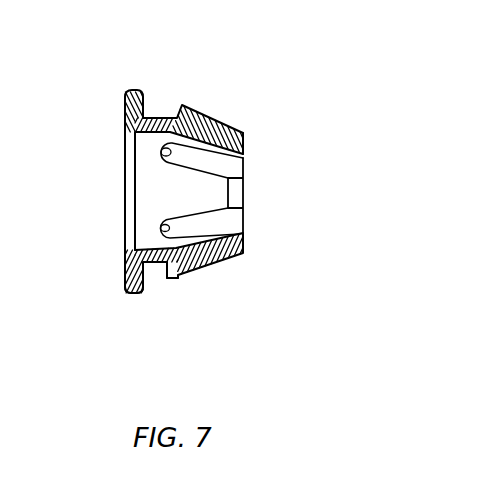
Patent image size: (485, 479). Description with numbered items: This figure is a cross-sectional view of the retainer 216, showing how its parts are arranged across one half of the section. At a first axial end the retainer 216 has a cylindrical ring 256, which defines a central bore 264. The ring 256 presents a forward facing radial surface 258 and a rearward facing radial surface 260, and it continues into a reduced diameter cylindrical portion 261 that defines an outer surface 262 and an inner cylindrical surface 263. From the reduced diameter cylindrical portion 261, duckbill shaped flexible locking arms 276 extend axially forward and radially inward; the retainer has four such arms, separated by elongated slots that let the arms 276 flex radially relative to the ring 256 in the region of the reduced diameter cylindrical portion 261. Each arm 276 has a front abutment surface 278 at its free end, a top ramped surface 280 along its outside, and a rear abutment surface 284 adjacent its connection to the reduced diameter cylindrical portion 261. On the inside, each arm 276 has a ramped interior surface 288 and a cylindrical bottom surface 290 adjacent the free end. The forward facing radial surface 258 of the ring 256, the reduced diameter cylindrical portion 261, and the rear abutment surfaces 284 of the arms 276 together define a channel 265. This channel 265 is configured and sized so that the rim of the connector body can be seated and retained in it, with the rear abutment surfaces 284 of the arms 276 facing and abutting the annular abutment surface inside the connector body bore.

The retainer 216 is at (212, 67).
The cylindrical ring 256 is at (130, 291).
The forward facing radial surface 258 is at (146, 283).
The rearward facing radial surface 260 is at (126, 275).
The reduced diameter cylindrical portion 261 is at (137, 150).
The outer surface 262 is at (178, 279).
The inner cylindrical surface 263 is at (137, 247).
The bore 264 is at (137, 213).
The channel 265 is at (157, 118).
The flexible locking arms 276 is at (220, 263).
The front abutment surface 278 is at (244, 143).
The top ramped surface 280 is at (228, 113).
The rear abutment surface 284 is at (176, 119).
The ramped interior surface 288 is at (198, 144).
The cylindrical bottom surface 290 is at (243, 180).